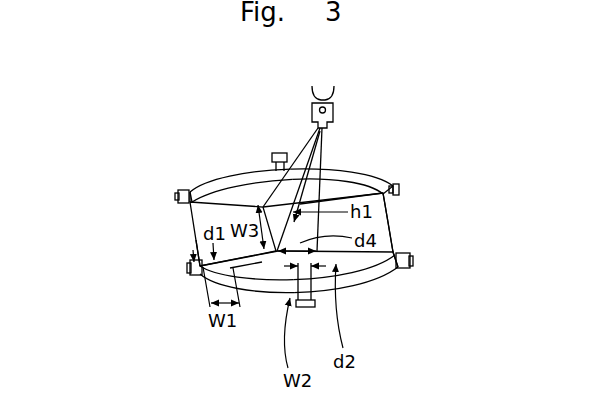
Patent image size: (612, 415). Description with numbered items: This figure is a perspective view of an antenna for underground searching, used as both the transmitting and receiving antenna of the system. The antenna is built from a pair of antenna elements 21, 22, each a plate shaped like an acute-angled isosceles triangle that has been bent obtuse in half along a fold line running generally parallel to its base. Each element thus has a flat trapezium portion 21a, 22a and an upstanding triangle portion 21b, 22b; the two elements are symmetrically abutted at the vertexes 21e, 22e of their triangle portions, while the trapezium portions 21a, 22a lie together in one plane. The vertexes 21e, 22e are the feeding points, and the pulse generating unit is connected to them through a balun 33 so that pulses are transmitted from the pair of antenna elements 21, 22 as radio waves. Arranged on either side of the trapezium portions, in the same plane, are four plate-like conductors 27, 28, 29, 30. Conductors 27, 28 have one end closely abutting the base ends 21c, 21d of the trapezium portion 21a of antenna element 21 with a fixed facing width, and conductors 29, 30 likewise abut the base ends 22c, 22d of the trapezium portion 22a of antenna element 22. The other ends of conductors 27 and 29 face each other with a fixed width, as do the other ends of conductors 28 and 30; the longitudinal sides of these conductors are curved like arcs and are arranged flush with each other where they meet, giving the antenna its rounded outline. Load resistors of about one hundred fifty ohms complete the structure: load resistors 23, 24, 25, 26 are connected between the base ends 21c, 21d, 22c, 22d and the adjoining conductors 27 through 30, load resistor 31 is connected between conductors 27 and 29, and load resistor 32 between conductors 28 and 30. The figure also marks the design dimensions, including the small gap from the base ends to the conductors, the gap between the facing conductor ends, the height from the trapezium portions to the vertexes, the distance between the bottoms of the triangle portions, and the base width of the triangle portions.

The antenna element 21 is at (244, 281).
The trapezium portion 21a is at (189, 222).
The triangle portion 21b is at (240, 190).
The base end 21c is at (178, 197).
The base end 21d is at (188, 256).
The vertex 21e is at (311, 142).
The antenna element 22 is at (368, 273).
The trapezium portion 22a is at (391, 223).
The triangle portion 22b is at (358, 180).
The base end 22c is at (391, 207).
The base end 22d is at (393, 250).
The vertex 22e is at (326, 141).
The load resistor 23 is at (177, 190).
The load resistor 24 is at (187, 270).
The load resistor 25 is at (399, 186).
The load resistor 26 is at (413, 259).
The plate-like conductor 27 is at (210, 188).
The plate-like conductor 28 is at (253, 268).
The plate-like conductor 29 is at (365, 186).
The plate-like conductor 30 is at (388, 276).
The load resistor 31 is at (274, 154).
The load resistor 32 is at (306, 308).
The balun 33 is at (325, 88).